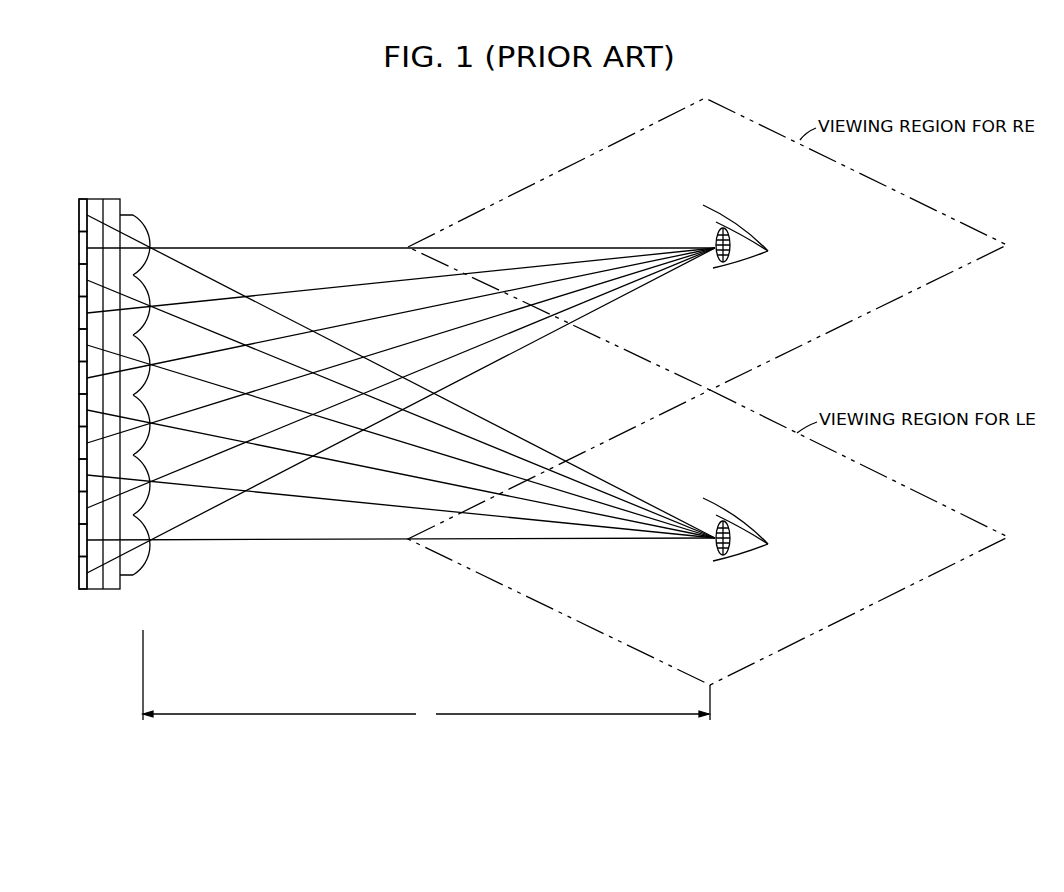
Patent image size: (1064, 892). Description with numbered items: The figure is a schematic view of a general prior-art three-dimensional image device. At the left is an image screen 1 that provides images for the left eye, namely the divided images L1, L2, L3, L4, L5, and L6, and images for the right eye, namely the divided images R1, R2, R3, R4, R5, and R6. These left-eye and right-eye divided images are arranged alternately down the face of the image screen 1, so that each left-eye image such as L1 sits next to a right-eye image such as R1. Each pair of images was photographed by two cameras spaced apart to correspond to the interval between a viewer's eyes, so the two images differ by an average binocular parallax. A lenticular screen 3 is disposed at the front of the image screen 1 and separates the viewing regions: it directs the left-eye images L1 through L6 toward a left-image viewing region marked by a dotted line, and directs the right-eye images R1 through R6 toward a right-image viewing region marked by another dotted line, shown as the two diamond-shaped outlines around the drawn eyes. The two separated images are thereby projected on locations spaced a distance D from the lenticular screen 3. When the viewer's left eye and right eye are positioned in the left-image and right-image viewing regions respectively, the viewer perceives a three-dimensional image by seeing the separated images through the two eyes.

The image screen 1 is at (83, 590).
The lenticular screen 3 is at (143, 572).
The distance D is at (426, 678).
The image for the LE L1 is at (384, 368).
The image for the RE R1 is at (384, 248).
The image for the LE L2 is at (384, 401).
The image for the RE R2 is at (384, 288).
The image for the LE L3 is at (384, 433).
The image for the RE R3 is at (384, 321).
The image for the LE L4 is at (384, 466).
The image for the RE R4 is at (384, 353).
The image for the LE L5 is at (384, 498).
The image for the RE R5 is at (384, 386).
The image for the LE L6 is at (384, 540).
The image for the RE R6 is at (384, 418).